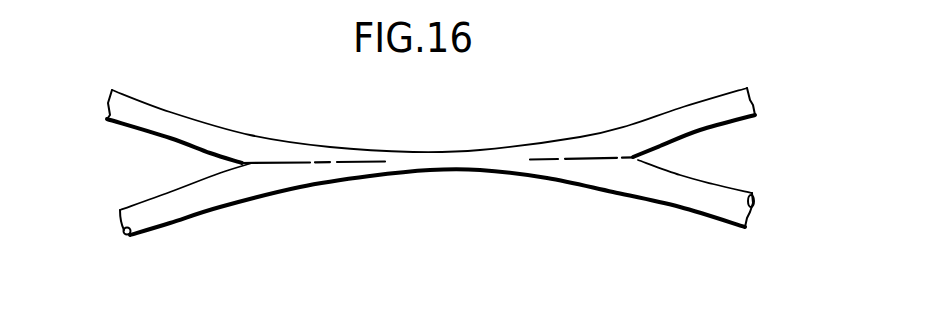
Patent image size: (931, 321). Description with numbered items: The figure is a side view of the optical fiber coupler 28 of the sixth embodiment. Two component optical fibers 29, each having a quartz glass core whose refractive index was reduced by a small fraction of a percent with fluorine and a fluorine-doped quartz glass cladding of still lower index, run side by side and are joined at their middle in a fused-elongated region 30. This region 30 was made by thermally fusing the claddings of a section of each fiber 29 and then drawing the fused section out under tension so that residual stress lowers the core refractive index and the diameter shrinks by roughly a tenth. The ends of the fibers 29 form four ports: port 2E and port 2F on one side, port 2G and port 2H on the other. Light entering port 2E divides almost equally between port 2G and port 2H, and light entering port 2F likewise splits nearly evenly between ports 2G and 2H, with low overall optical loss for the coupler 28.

The optical fiber coupler 28 is at (515, 133).
The component optical fibers 29 is at (693, 115).
The fused-elongated region 30 is at (482, 172).
The port 2E is at (89, 104).
The port 2F is at (103, 222).
The port 2G is at (772, 102).
The port 2H is at (771, 210).